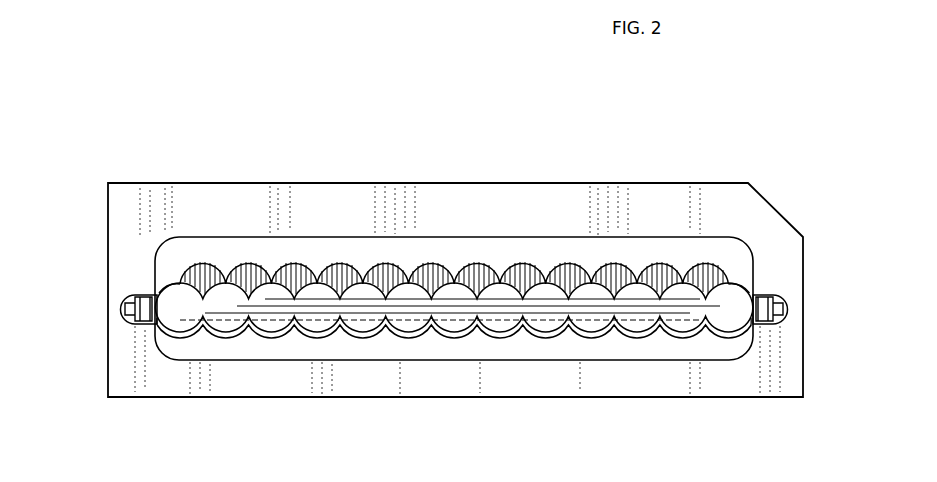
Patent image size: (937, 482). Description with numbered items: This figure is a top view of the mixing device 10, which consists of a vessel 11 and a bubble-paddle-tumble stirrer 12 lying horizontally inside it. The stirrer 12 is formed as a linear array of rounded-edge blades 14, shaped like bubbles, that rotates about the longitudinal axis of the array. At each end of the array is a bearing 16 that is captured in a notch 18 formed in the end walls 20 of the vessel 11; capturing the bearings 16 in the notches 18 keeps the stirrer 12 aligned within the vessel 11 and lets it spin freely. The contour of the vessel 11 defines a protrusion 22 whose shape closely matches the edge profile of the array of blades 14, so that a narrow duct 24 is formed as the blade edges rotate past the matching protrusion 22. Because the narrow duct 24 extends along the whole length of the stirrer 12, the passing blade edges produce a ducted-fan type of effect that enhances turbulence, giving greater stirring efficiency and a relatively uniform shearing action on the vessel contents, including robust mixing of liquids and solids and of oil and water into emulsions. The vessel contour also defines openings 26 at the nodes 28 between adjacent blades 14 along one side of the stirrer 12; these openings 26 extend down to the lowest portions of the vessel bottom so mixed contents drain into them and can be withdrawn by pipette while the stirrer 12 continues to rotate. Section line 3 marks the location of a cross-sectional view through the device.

The section line 3- 3 is at (107, 310).
The mixing device 10 is at (106, 180).
The vessel 11 is at (672, 183).
The bubble-paddle-tumble stirrer 12 is at (471, 278).
The rounded-edge blades 14 is at (617, 272).
The bearing 16 is at (147, 324).
The notch 18 is at (130, 295).
The end walls 20 is at (127, 347).
The protrusion 22 is at (205, 330).
The narrow duct 24 is at (240, 333).
The openings 26 is at (297, 272).
The nodes 28 is at (432, 280).